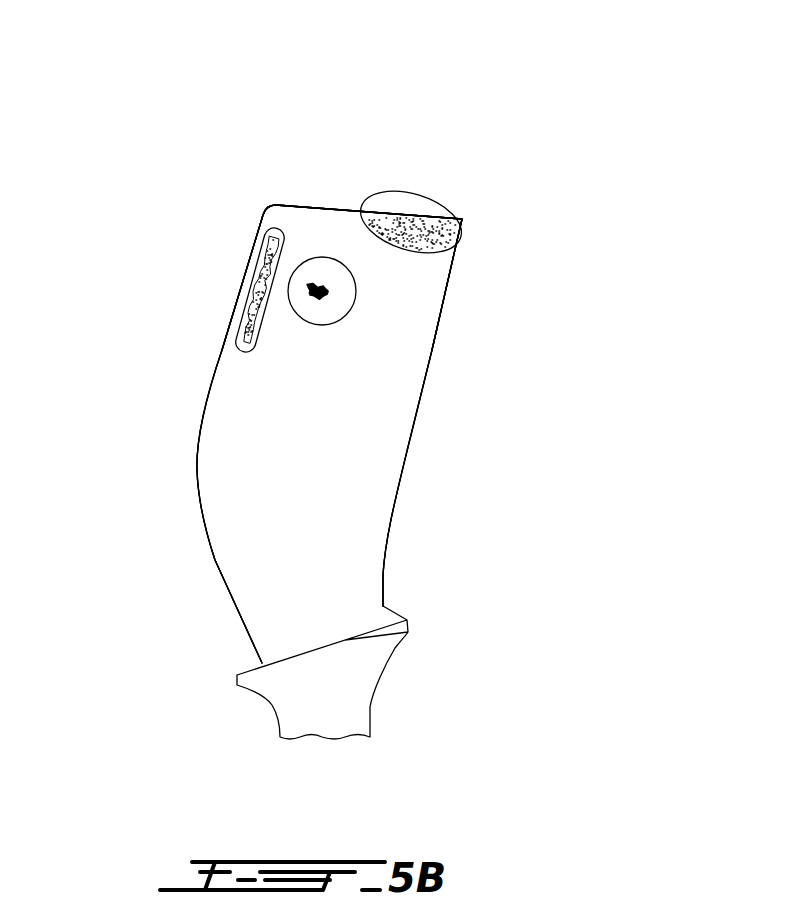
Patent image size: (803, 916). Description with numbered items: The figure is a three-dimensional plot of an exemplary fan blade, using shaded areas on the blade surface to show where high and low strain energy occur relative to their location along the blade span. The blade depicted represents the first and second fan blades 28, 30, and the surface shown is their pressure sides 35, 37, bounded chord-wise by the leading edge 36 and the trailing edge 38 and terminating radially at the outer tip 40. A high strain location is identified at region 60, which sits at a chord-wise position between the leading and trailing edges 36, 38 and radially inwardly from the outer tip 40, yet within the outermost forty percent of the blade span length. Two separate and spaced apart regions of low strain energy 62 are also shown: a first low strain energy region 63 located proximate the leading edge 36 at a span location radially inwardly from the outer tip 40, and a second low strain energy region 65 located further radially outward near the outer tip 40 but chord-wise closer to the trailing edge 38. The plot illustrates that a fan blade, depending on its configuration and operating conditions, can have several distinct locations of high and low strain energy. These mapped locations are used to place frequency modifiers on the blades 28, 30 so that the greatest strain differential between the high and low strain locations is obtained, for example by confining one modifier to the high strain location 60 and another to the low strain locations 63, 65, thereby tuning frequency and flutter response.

The first fan blade 28 is at (485, 369).
The second fan blade 30 is at (329, 434).
The pressure side 35 is at (337, 488).
The pressure side 37 is at (342, 277).
The leading edge 36 is at (200, 510).
The trailing edge 38 is at (408, 448).
The outer tip 40 is at (295, 206).
The high strain energy region 60 is at (320, 278).
The low strain energy regions 62 is at (421, 191).
The first low strain energy region 63 is at (262, 268).
The second low strain energy region 65 is at (440, 222).